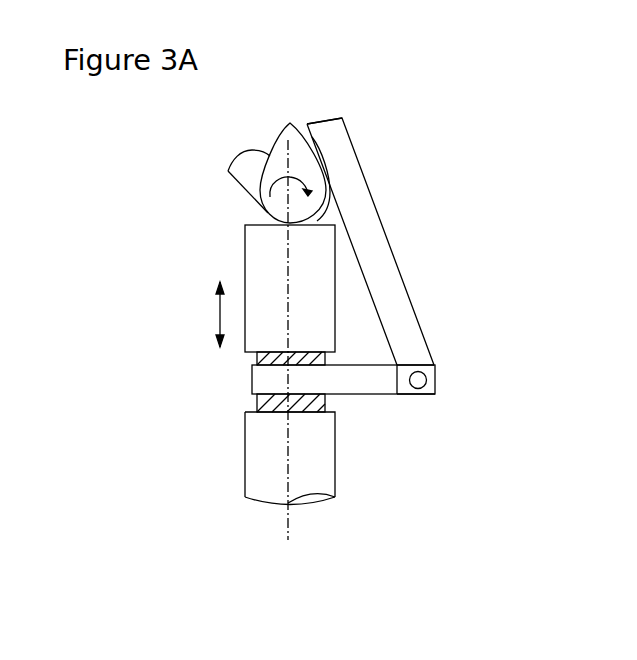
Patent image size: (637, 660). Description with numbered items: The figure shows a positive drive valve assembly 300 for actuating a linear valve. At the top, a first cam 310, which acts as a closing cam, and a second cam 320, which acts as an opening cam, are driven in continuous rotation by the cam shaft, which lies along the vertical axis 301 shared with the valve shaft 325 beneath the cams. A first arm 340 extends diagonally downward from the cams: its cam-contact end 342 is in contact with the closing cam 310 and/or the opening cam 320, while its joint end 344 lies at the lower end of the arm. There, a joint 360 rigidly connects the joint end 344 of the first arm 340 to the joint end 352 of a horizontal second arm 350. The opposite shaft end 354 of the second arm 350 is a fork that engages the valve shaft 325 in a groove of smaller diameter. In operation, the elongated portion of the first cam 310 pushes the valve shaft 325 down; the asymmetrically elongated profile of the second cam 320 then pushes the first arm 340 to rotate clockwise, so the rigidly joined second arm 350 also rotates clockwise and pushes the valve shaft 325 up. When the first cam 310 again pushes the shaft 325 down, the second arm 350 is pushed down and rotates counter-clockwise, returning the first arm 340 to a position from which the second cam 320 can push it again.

The positive drive valve assembly 300 is at (457, 80).
The rotation axis 301 is at (288, 527).
The first cam 310 is at (238, 172).
The second cam 320 is at (280, 135).
The valve shaft 325 is at (253, 455).
The first arm 340 is at (378, 230).
The cam-contact end 342 is at (340, 130).
The joint end 344 is at (428, 377).
The second arm 350 is at (355, 394).
The joint end 352 is at (420, 396).
The shaft end 354 is at (257, 380).
The joint 360 is at (416, 364).